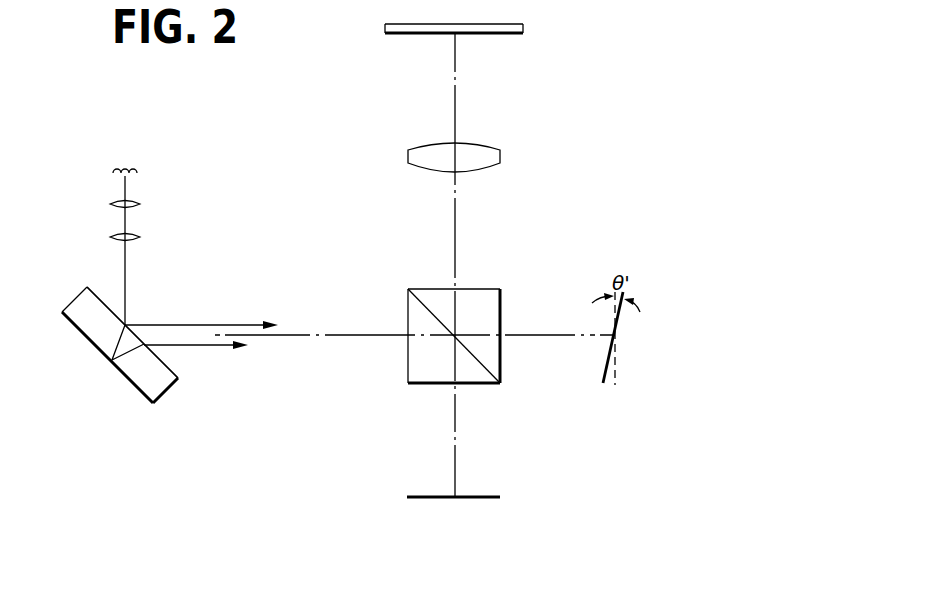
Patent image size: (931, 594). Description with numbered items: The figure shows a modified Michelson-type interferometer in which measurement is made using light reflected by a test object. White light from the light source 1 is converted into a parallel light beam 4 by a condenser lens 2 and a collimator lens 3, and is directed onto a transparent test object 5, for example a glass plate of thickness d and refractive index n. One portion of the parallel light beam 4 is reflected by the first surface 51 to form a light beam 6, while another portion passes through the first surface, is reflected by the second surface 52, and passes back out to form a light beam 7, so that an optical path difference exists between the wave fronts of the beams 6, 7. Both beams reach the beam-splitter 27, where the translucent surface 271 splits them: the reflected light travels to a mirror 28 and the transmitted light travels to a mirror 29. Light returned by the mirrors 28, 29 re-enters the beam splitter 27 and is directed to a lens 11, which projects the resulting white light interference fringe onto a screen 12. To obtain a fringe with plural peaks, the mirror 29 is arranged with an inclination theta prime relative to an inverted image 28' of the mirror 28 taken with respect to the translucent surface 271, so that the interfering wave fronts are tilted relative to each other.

The light source 1 is at (130, 165).
The condenser lens 2 is at (140, 204).
The collimator lens 3 is at (140, 237).
The parallel light beam 4 is at (127, 272).
The test object 5 is at (123, 333).
The first surface 51 is at (102, 300).
The second surface 52 is at (100, 351).
The light beam 6 is at (222, 323).
The light beam 7 is at (219, 348).
The lens 11 is at (500, 157).
The screen 12 is at (523, 30).
The beam-splitter 27 is at (488, 361).
The translucent surface 271 is at (487, 350).
The mirror 28 is at (453, 468).
The inverted image of the mirror 28' is at (646, 338).
The mirror 29 is at (604, 373).